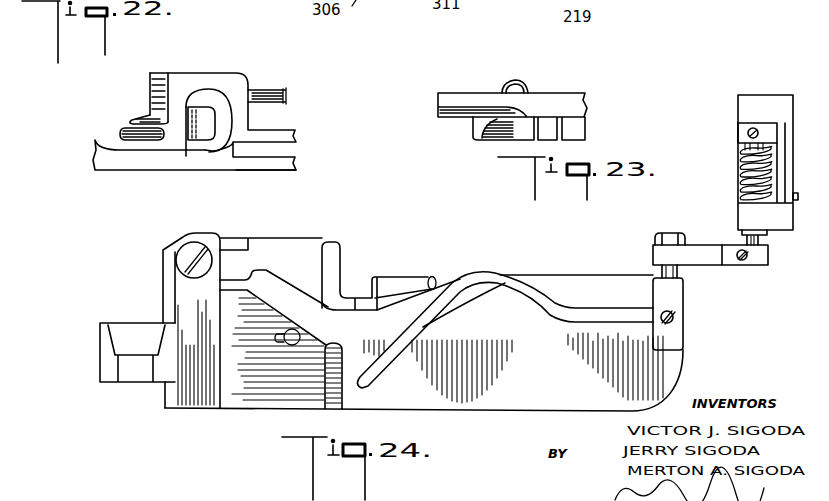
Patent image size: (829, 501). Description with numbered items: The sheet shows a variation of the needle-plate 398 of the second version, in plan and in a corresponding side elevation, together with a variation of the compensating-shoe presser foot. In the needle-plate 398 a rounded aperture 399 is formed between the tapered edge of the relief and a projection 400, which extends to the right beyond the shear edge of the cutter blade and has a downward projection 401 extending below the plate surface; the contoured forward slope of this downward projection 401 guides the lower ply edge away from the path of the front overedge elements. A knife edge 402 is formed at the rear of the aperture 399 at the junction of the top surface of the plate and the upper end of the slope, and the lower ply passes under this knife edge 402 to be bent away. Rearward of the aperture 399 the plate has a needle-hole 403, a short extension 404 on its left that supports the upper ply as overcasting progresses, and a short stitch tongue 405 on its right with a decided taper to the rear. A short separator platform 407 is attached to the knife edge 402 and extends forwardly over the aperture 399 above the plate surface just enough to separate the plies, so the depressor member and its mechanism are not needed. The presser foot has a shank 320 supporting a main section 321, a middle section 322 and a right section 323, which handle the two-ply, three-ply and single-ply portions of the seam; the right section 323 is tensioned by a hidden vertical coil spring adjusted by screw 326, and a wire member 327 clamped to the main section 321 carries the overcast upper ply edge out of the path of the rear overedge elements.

In FIG. 22, the needle-plate 398 is at (276, 170).
In FIG. 23, the needle-plate 398 is at (578, 97).
In FIG. 22, the rounded aperture 399 is at (225, 104).
In FIG. 23, the rounded aperture 399 is at (485, 137).
In FIG. 22, the projection 400 is at (230, 73).
In FIG. 23, the downward projection 401 is at (477, 133).
In FIG. 22, the knife edge 402 is at (186, 156).
In FIG. 22, the needle-hole 403 is at (166, 84).
In FIG. 22, the short extension 404 is at (123, 130).
In FIG. 22, the short stitch tongue 405 is at (143, 117).
In FIG. 22, the separator platform 407 is at (206, 107).
In FIG. 23, the separator platform 407 is at (521, 79).
In FIG. 24, the shank 320 is at (103, 333).
In FIG. 24, the main section 321 is at (515, 395).
In FIG. 24, the middle section 322 is at (263, 397).
In FIG. 24, the right section 323 is at (335, 252).
In FIG. 24, the screw 326 is at (185, 247).
In FIG. 24, the wire member 327 is at (490, 272).